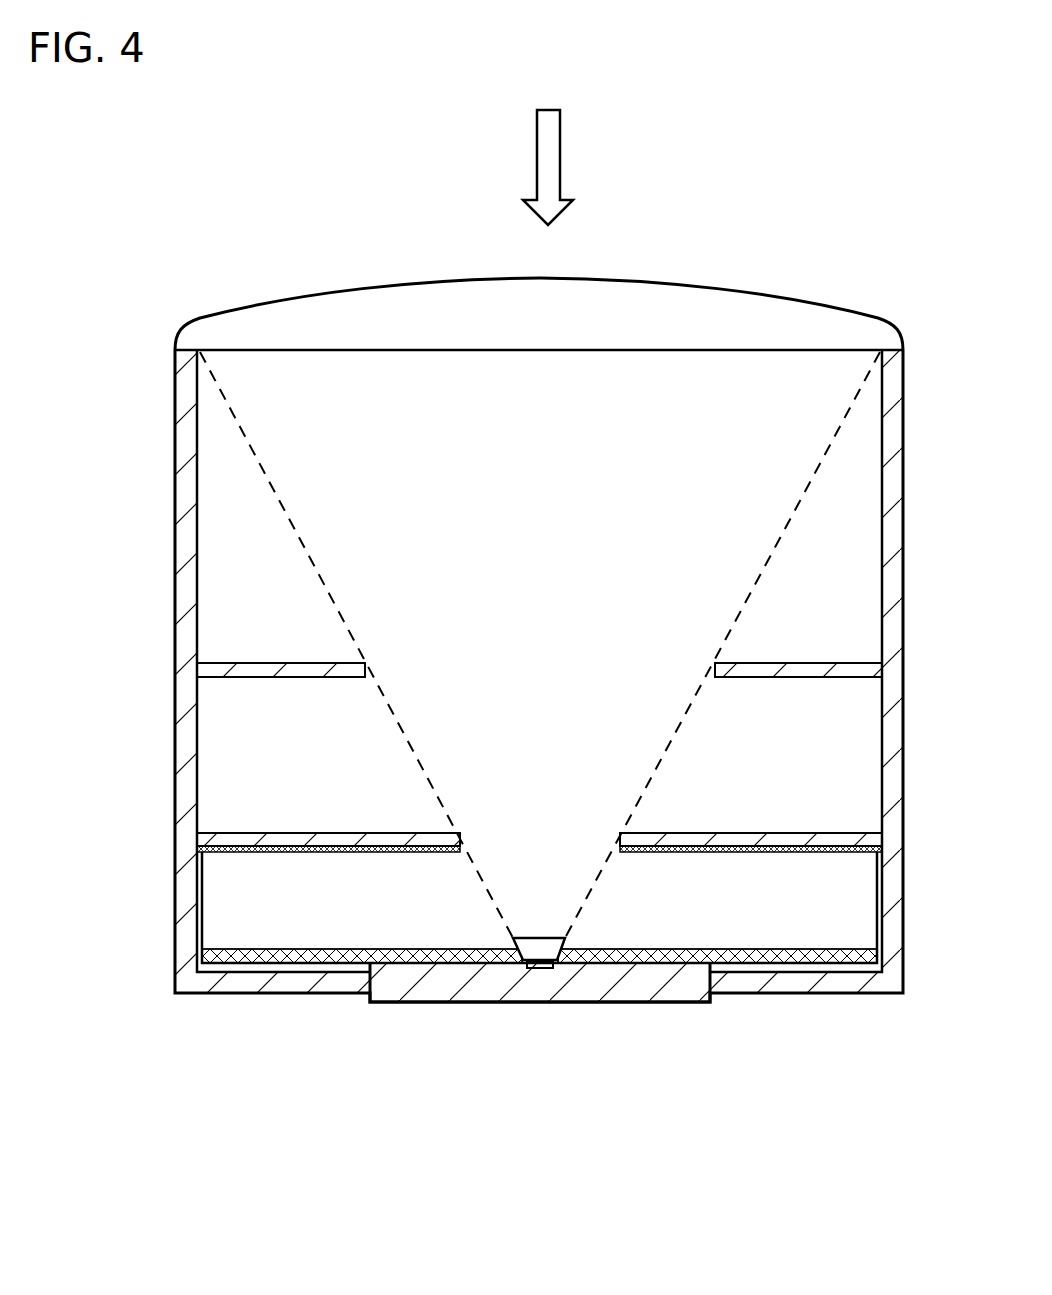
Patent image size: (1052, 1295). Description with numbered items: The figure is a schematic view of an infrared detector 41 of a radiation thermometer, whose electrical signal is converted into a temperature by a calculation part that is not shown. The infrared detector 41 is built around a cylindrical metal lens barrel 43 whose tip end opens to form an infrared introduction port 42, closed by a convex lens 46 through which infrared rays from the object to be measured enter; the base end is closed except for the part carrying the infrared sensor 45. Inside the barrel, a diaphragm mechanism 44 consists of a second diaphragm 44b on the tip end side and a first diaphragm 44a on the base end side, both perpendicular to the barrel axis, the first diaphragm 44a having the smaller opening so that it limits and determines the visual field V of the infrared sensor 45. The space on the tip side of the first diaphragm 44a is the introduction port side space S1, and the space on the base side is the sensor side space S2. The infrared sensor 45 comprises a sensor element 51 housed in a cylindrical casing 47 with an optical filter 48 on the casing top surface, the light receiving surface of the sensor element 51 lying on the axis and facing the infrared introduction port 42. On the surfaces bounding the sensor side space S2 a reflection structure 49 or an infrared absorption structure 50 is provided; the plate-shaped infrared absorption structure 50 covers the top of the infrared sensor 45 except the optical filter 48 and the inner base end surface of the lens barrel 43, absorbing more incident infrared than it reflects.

The infrared detector 41 is at (779, 198).
The infrared introduction port 42 is at (748, 352).
The lens barrel 43 is at (175, 455).
The diaphragm mechanism 44 is at (231, 652).
The first diaphragm 44a is at (300, 833).
The second diaphragm 44b is at (268, 663).
The infrared sensor 45 is at (679, 1025).
The convex lens 46 is at (543, 278).
The casing 47 is at (430, 1003).
The optical filter 48 is at (568, 951).
The reflection structure 49 is at (780, 948).
The infrared absorption structure 50 is at (302, 853).
The sensor element 51 is at (547, 969).
The visual field V is at (388, 694).
The introduction port side space S1 is at (380, 790).
The sensor side space S2 is at (373, 905).